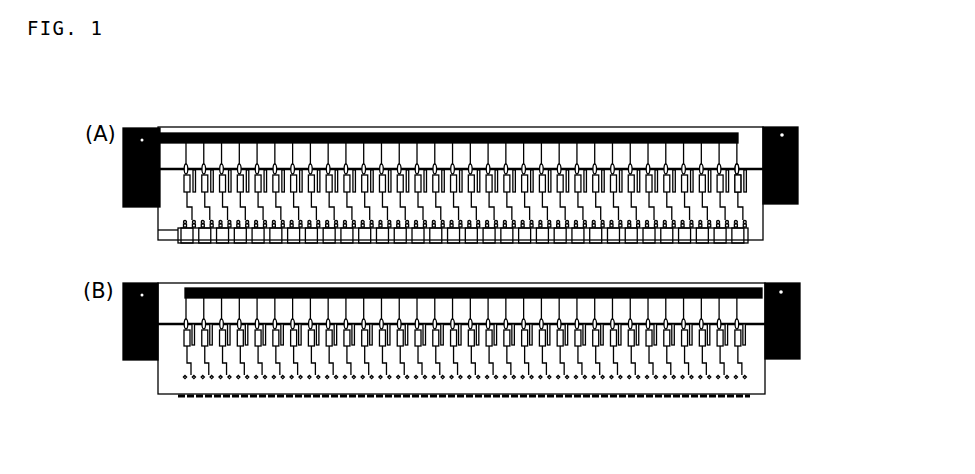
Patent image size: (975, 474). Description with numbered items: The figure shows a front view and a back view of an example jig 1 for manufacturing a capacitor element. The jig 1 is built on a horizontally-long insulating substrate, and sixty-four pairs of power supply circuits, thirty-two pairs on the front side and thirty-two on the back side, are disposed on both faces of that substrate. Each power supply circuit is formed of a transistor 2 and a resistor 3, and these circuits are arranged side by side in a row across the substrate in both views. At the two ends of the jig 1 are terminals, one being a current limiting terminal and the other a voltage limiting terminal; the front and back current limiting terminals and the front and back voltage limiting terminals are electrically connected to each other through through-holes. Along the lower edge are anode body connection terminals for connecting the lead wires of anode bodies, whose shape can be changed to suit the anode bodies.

The jig for manufacturing a capacitor 1 is at (505, 127).
The transistor 2 is at (740, 192).
The resistor 3 is at (739, 164).